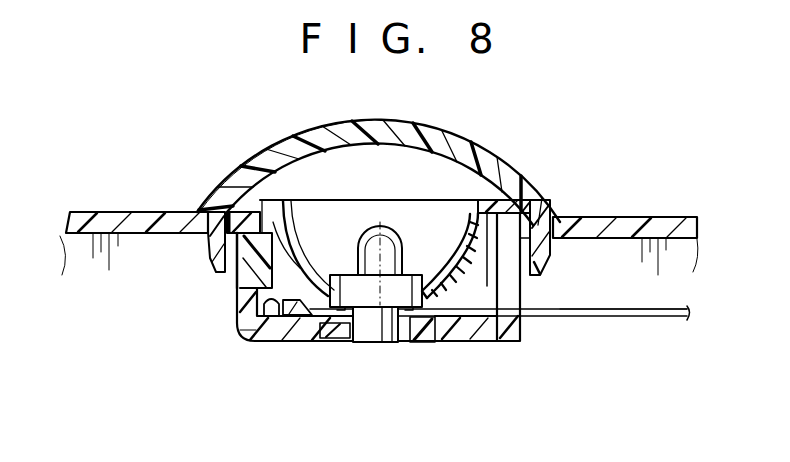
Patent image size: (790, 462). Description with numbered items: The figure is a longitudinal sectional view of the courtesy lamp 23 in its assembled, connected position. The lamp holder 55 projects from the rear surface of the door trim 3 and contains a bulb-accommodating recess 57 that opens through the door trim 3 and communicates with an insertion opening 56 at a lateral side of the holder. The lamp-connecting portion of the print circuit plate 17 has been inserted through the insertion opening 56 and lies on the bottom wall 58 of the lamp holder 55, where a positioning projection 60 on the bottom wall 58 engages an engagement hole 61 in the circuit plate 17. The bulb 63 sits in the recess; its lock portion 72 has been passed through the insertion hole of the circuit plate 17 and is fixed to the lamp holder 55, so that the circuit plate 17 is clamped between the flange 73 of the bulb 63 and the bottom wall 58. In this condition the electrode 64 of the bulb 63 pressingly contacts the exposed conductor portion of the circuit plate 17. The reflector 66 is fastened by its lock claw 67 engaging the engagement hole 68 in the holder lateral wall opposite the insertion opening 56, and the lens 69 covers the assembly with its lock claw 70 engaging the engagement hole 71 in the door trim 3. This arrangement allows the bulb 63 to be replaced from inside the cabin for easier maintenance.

The door trim 3 is at (641, 221).
The print circuit plate 17 is at (654, 322).
The courtesy lamp 23 is at (512, 148).
The lamp holder 55 is at (270, 343).
The insertion opening 56 is at (508, 296).
The bulb-accommodating recess 57 is at (478, 285).
The bottom wall 58 is at (318, 322).
The positioning projection 60 is at (298, 316).
The engagement hole 61 is at (243, 335).
The bulb 63 is at (460, 235).
The electrode 64 is at (333, 297).
The reflector 66 is at (306, 200).
The lock claw 67 is at (244, 270).
The engagement hole 68 is at (239, 276).
The lens 69 is at (270, 147).
The lock claw 70 is at (547, 263).
The engagement hole 71 is at (549, 212).
The lock portion 72 is at (420, 343).
The flange 73 is at (378, 228).